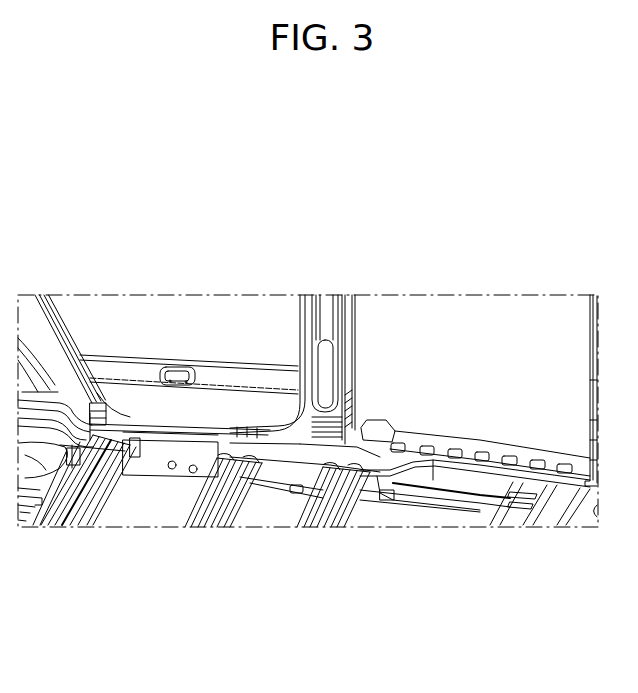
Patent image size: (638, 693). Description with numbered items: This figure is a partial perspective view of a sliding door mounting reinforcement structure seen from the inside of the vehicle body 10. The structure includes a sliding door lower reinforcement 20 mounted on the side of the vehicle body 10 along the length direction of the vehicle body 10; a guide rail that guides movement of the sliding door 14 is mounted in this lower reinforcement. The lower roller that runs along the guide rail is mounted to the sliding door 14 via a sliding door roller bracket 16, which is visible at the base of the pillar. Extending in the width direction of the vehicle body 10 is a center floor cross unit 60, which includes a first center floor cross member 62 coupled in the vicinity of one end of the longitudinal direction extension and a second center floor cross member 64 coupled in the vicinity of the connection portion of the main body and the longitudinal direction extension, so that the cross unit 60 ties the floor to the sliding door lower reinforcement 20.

The vehicle body 10 is at (333, 258).
The sliding door 14 is at (399, 297).
The sliding door roller bracket 16 is at (381, 425).
The sliding door lower reinforcement 20 is at (465, 508).
The center floor cross unit 60 is at (207, 617).
The first center floor cross member 62 is at (228, 503).
The second center floor cross member 64 is at (319, 498).